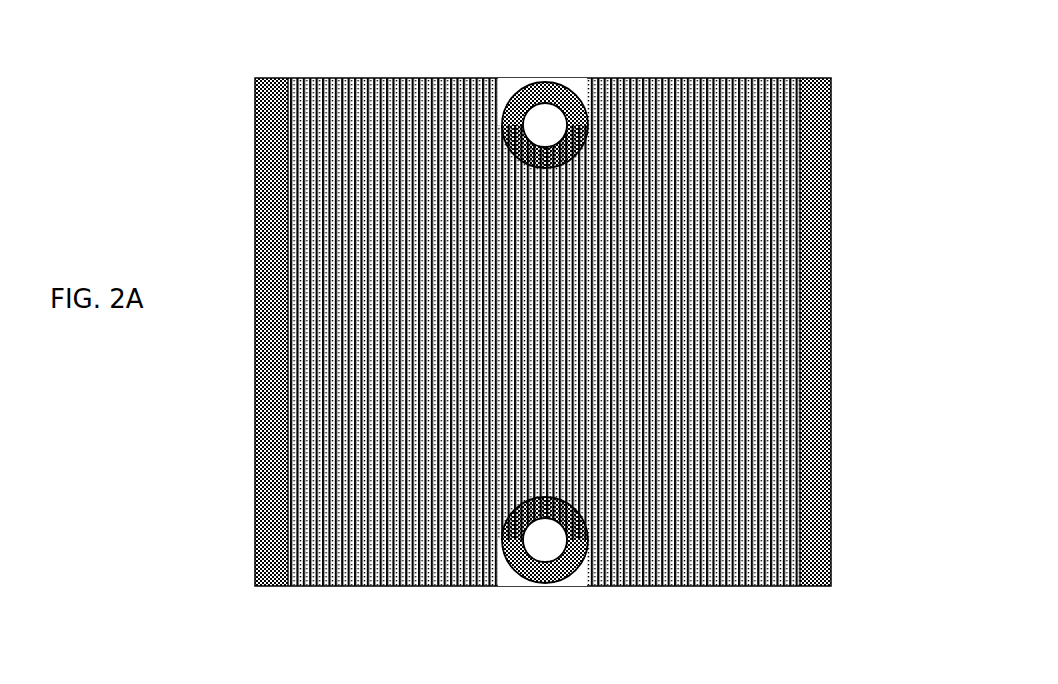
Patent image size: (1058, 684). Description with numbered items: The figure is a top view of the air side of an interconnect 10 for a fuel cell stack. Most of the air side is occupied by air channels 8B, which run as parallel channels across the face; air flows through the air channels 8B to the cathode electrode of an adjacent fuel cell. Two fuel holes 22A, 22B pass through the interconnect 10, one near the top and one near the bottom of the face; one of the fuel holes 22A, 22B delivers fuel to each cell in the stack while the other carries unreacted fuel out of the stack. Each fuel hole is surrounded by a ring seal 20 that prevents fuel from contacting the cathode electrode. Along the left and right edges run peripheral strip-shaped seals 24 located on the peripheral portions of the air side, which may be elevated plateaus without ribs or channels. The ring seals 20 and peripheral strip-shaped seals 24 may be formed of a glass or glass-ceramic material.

The interconnect 10 is at (230, 240).
The air channels 8B is at (712, 428).
The peripheral strip-shaped seals 24 is at (828, 319).
The ring seals 20 is at (503, 583).
The fuel hole 22A is at (545, 103).
The fuel hole 22B is at (540, 558).